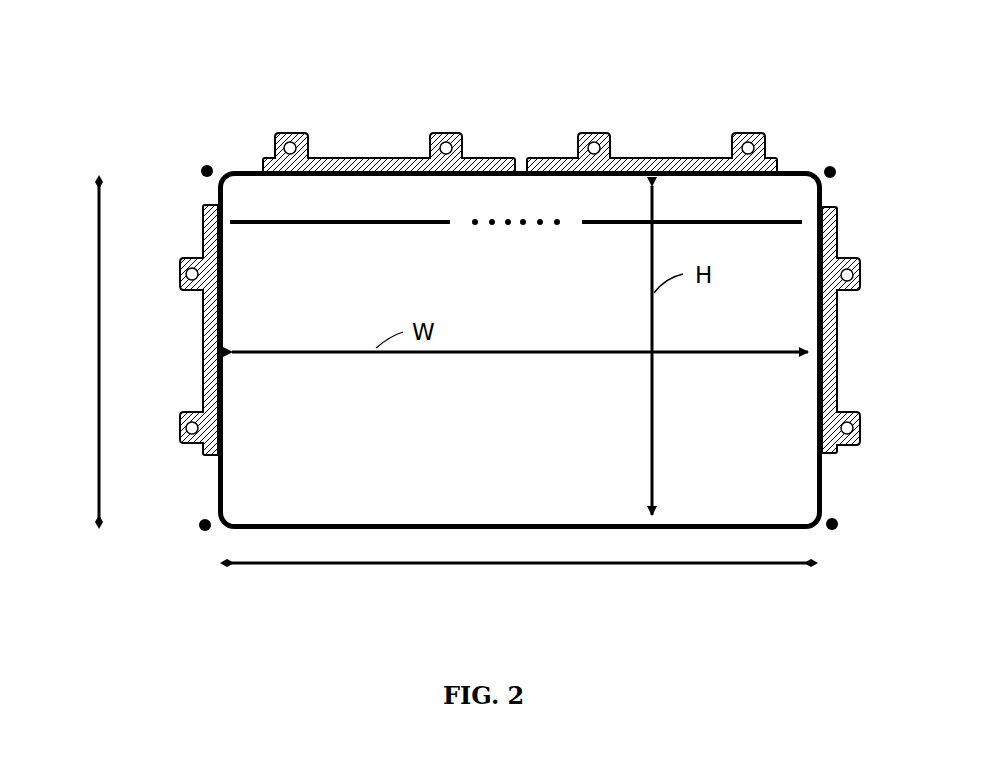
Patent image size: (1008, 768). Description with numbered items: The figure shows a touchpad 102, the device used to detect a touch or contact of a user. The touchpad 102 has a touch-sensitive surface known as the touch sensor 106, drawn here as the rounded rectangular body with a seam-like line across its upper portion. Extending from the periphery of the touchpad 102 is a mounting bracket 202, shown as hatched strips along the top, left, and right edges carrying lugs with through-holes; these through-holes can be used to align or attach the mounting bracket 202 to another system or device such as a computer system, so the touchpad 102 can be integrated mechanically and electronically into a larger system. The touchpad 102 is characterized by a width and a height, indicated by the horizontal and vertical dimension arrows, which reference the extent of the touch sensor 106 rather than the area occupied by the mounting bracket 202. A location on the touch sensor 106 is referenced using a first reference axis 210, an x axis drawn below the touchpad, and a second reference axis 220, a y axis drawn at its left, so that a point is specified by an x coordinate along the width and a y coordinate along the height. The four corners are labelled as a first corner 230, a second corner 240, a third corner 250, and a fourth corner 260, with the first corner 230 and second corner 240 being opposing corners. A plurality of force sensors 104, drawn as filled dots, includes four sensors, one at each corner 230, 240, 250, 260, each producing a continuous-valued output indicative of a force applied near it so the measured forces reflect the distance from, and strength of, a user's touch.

The touchpad 102 is at (494, 70).
The plurality of force sensors 104 is at (204, 163).
The touch sensor 106 is at (291, 271).
The mounting bracket 202 is at (470, 157).
The first reference axis 210 is at (685, 565).
The second reference axis 220 is at (97, 330).
The first corner 230 is at (223, 137).
The second corner 240 is at (838, 561).
The third corner 250 is at (819, 137).
The fourth corner 260 is at (199, 560).